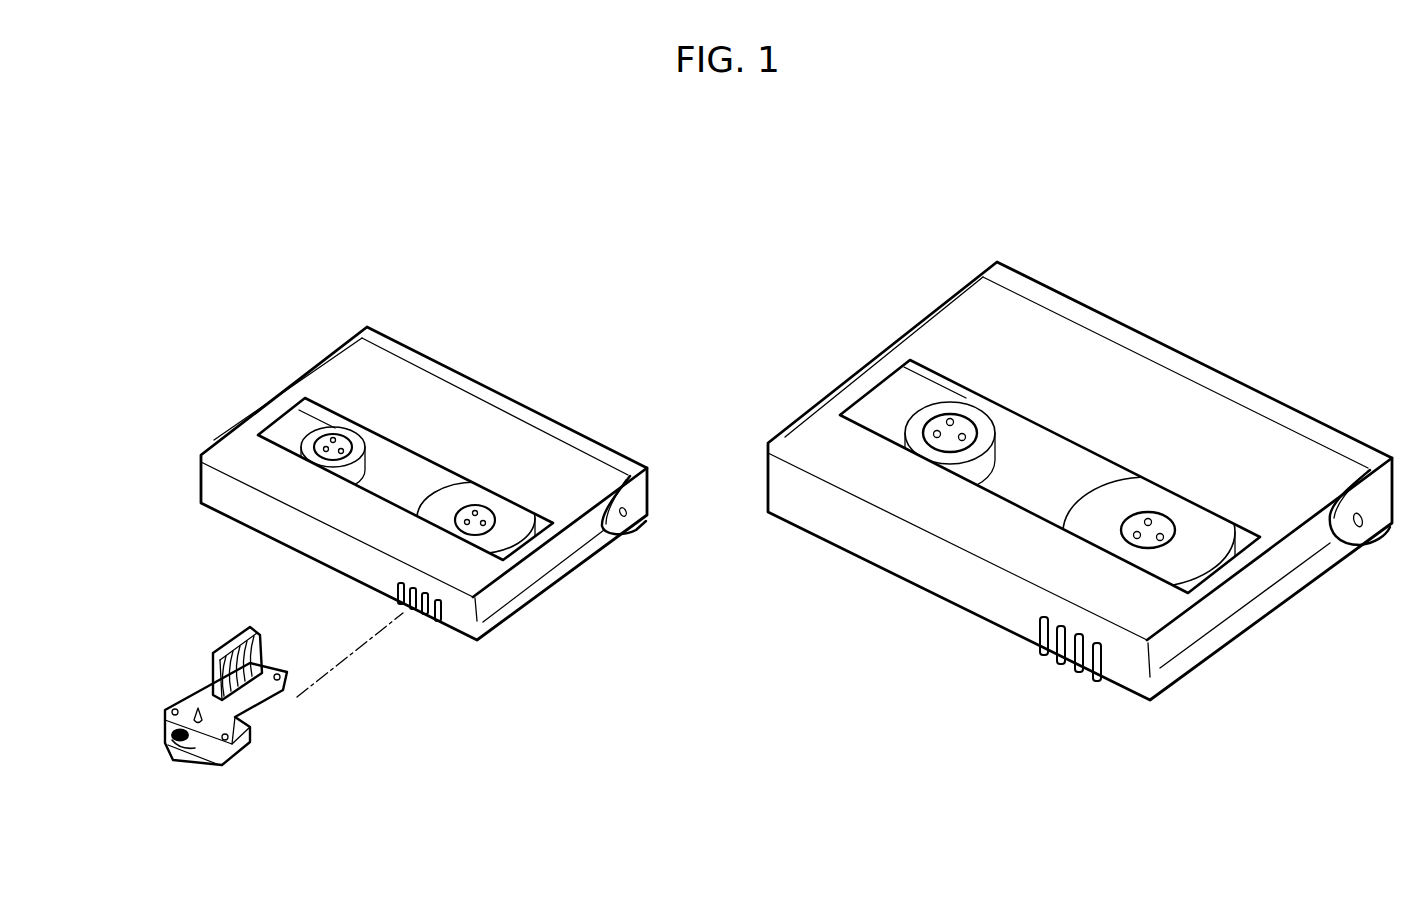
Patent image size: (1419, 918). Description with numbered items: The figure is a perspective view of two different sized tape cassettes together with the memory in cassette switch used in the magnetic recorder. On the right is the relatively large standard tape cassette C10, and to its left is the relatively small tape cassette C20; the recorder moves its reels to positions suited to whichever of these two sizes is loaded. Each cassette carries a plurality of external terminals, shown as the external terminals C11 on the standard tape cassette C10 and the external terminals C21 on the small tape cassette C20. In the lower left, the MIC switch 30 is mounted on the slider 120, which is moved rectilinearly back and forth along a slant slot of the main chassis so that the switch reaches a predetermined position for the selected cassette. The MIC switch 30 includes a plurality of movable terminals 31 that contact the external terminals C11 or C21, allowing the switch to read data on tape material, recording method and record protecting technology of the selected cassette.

The standard tape cassette C10 is at (1080, 489).
The external terminals of standard tape cassette C11 is at (1095, 678).
The small tape cassette C20 is at (430, 514).
The external terminals of small tape cassette C21 is at (437, 626).
The MIC switch 30 is at (234, 640).
The movable terminals 31 is at (262, 657).
The slider 120 is at (190, 690).